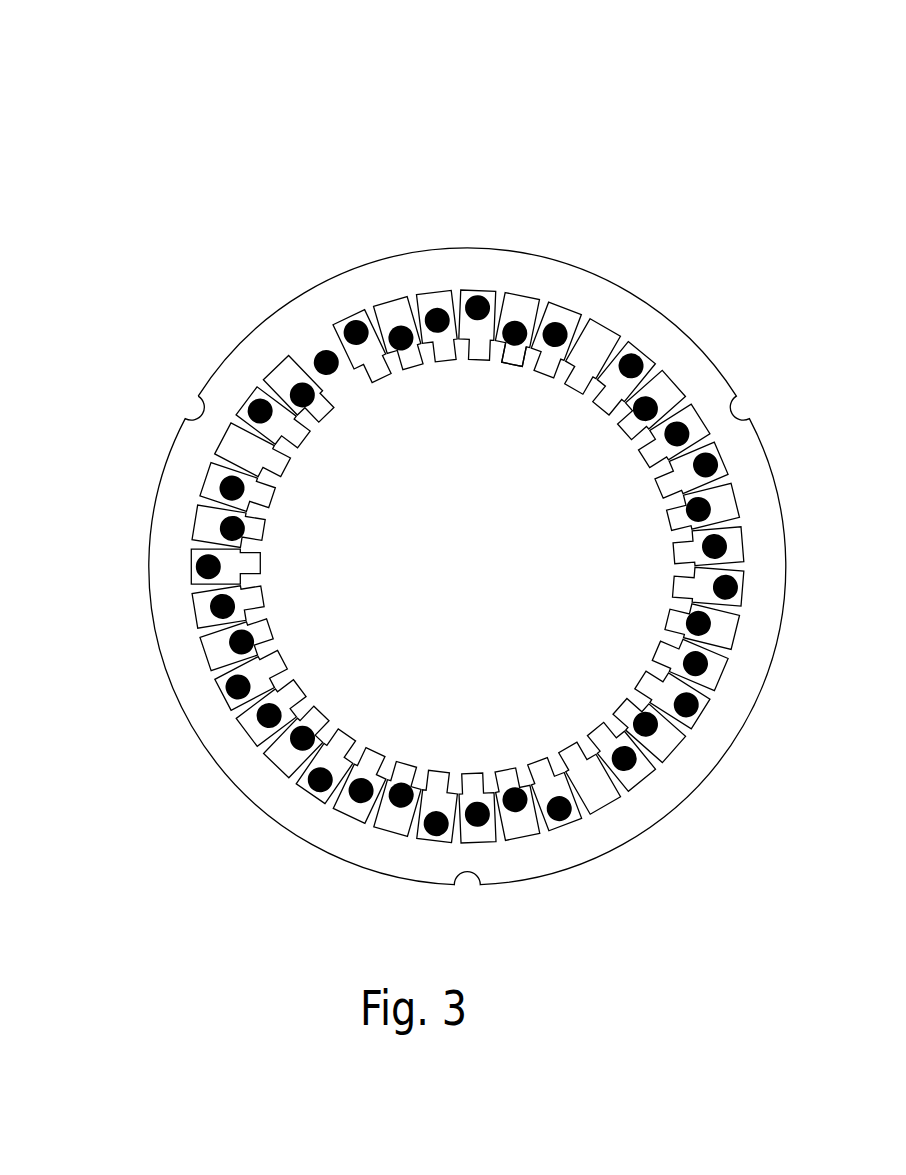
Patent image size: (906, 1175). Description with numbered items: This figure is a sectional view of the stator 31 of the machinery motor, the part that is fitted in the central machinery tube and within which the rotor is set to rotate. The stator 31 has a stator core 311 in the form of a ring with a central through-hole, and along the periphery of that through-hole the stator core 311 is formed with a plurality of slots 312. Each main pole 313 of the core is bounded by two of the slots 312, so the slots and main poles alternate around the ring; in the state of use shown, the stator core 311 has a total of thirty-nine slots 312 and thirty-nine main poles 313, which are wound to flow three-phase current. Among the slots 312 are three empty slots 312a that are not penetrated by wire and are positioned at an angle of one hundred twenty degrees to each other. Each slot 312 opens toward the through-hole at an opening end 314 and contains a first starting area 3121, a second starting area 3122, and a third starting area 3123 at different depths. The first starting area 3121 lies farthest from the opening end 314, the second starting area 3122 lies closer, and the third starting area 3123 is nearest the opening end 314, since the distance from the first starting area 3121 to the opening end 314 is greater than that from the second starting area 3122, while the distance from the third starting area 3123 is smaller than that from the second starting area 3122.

The stator 31 is at (490, 33).
The stator core 311 is at (472, 258).
The slot 312 is at (521, 308).
The empty slot 312a is at (603, 337).
The main pole 313 is at (303, 420).
The opening end 314 is at (512, 353).
The first starting area 3121 is at (250, 408).
The second starting area 3122 is at (318, 358).
The third starting area 3123 is at (398, 332).